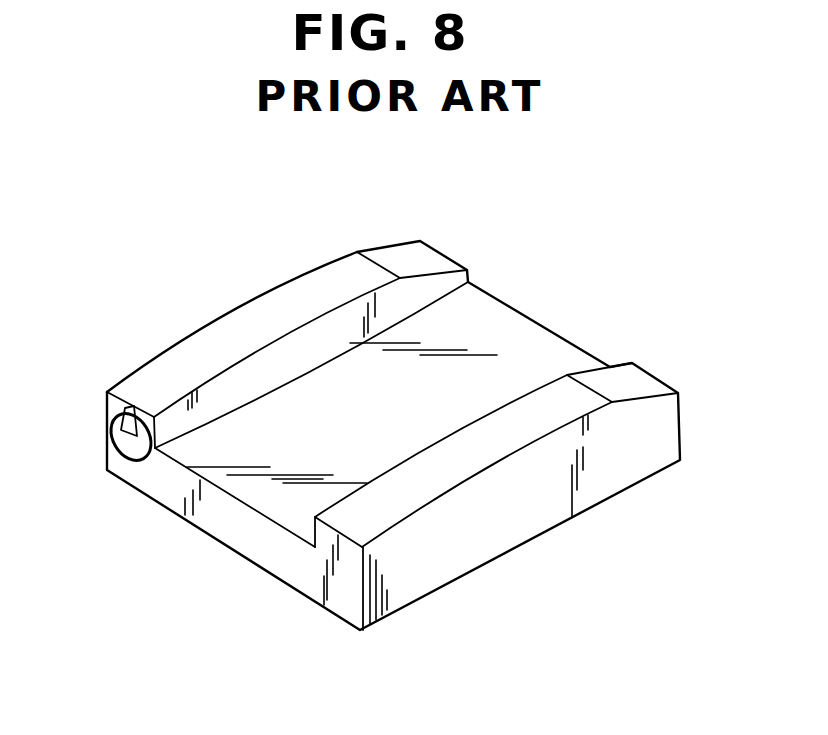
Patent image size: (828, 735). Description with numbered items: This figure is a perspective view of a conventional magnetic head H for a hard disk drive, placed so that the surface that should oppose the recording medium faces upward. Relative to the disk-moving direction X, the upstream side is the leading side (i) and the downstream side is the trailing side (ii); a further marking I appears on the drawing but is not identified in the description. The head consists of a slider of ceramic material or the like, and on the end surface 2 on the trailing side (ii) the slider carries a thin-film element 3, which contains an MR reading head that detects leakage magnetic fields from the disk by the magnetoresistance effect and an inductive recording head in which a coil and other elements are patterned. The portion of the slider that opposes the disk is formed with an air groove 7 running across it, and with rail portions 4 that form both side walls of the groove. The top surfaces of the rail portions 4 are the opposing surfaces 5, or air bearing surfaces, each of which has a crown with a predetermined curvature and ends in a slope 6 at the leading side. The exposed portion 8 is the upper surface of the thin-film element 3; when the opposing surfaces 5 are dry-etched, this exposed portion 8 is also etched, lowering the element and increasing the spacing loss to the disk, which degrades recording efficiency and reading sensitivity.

The end surface 2 is at (163, 504).
The thin-film element 3 is at (126, 443).
The rail portions 4 is at (228, 307).
The opposing surfaces 5 is at (292, 300).
The slope 6 is at (402, 258).
The air groove 7 is at (514, 322).
The exposed portion 8 is at (129, 409).
The leading side i is at (492, 279).
The trailing side ii is at (267, 543).
The direction I is at (197, 547).
The disk-moving direction X is at (667, 243).
The magnetic head H is at (603, 350).